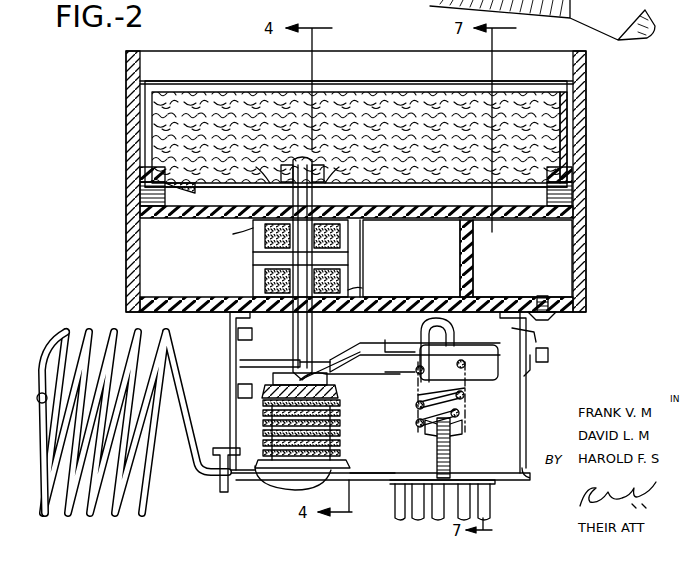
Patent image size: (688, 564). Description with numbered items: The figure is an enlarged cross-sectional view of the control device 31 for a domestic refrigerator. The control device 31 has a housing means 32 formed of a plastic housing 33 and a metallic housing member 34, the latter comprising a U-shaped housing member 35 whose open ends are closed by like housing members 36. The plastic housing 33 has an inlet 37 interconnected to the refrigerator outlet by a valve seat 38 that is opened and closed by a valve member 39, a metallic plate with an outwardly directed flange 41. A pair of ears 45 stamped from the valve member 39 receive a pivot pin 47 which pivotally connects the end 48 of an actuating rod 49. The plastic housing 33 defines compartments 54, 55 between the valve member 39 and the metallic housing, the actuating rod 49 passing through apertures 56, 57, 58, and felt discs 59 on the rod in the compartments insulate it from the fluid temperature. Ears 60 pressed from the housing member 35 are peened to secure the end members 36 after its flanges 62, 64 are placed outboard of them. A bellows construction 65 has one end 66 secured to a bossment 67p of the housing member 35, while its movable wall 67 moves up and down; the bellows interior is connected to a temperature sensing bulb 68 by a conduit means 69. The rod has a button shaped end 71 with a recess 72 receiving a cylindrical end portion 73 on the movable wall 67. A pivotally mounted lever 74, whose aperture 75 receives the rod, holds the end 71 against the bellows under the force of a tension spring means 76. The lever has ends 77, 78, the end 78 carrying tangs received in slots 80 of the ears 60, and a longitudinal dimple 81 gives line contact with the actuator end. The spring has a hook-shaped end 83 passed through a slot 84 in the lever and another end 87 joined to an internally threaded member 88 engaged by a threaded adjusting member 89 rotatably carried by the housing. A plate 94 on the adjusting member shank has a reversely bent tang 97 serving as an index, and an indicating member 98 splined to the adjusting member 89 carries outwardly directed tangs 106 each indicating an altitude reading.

The control device 31 is at (612, 128).
The housing means 32 is at (588, 293).
The plastic housing 33 is at (574, 184).
The metallic housing member 34 is at (528, 402).
The U-shaped housing member 35 is at (516, 426).
The housing members 36 is at (228, 340).
The inlet 37 is at (190, 60).
The valve seat 38 is at (572, 150).
The valve member 39 is at (406, 82).
The flange 41 is at (221, 82).
The ears 45 is at (350, 182).
The pivot pin 47 is at (322, 182).
The end of actuating rod 48 is at (290, 184).
The actuating rod 49 is at (312, 328).
The compartment 54 is at (264, 244).
The compartment 55 is at (254, 278).
The aperture 56 is at (315, 308).
The aperture 57 is at (350, 264).
The aperture 58 is at (342, 234).
The felt discs 59 is at (252, 236).
The ears 60 is at (242, 362).
The flange 62 is at (517, 478).
The flange 64 is at (212, 476).
The bellows construction 65 is at (338, 423).
The bellows end 66 is at (342, 460).
The movable wall of bellows 67 is at (262, 400).
The bossment 67p is at (440, 434).
The temperature sensing bulb 68 is at (42, 374).
The conduit means 69 is at (84, 332).
The button shaped end 71 is at (382, 376).
The recess 72 is at (328, 393).
The cylindrical end portion 73 is at (346, 364).
The lever 74 is at (480, 316).
The aperture 75 is at (441, 360).
The tension spring means 76 is at (465, 424).
The lever end 77 is at (254, 360).
The lever end 78 is at (524, 338).
The slots 80 is at (533, 356).
The longitudinal dimple 81 is at (308, 362).
The hook-shaped end 83 is at (450, 298).
The slot 84 is at (420, 374).
The spring end 87 is at (470, 440).
The internally threaded member 88 is at (401, 478).
The threaded adjusting member 89 is at (394, 488).
The plate 94 is at (424, 490).
The reversely bent tang 97 is at (446, 502).
The indicating member 98 is at (492, 488).
The tangs 106 is at (486, 512).